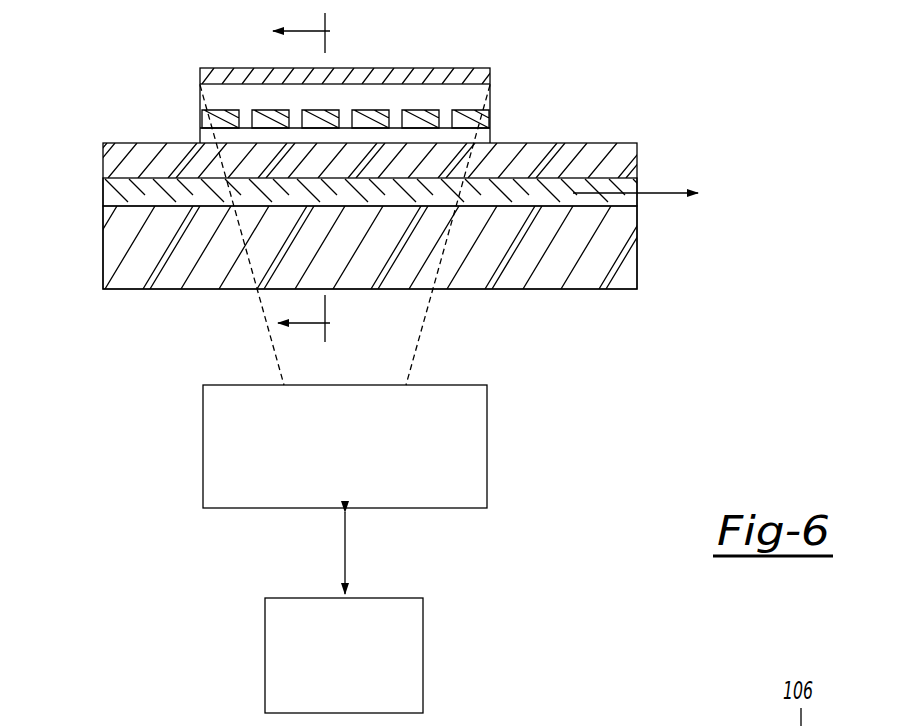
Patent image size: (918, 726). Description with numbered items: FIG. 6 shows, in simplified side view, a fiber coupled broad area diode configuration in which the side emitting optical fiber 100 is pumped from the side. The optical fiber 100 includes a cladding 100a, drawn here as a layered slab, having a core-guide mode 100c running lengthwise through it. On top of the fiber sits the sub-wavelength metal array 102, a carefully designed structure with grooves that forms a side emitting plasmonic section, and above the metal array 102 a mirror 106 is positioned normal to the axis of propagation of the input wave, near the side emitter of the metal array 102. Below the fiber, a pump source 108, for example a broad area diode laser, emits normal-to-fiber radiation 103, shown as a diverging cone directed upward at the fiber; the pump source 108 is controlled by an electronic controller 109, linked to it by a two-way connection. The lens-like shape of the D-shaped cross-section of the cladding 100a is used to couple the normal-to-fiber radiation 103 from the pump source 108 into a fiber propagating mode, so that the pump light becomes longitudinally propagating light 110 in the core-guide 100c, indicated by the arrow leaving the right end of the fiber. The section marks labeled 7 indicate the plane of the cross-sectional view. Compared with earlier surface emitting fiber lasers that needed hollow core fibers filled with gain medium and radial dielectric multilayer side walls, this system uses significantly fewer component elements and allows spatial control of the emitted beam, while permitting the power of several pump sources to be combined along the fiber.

The optical fiber 100 is at (549, 292).
The cladding 100a is at (136, 270).
The core-guide mode 100c is at (135, 193).
The sub-wavelength metal array 102 is at (203, 117).
The normal-to-fiber radiation 103 is at (296, 302).
The mirror 106 is at (205, 77).
The pump source 108 is at (325, 490).
The electronic controller 109 is at (325, 702).
The longitudinally propagating light 110 is at (647, 193).
The section line for Fig. 7 is at (324, 180).